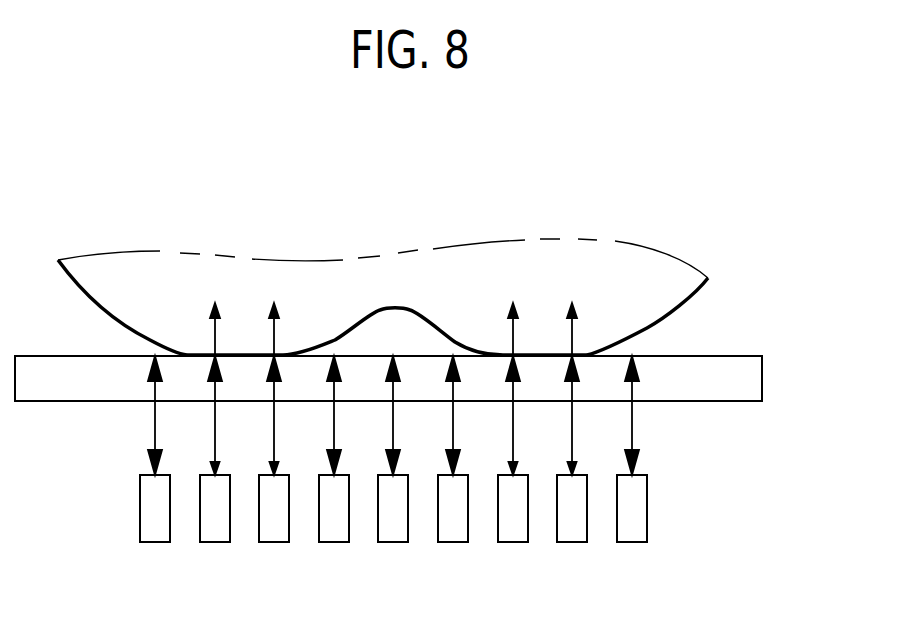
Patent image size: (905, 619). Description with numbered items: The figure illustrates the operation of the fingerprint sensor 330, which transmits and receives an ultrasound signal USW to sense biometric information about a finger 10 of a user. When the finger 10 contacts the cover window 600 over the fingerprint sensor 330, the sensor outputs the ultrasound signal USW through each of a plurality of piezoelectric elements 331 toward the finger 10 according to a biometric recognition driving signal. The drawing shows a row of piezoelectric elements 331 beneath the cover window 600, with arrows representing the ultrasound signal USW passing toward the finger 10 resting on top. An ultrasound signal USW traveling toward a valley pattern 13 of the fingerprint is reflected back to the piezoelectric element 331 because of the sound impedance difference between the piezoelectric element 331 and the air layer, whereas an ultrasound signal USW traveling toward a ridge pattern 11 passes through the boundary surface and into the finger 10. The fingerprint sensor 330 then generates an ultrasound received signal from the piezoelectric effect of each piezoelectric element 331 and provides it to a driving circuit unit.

The finger 10 is at (383, 268).
The ridge pattern 11 is at (237, 353).
The valley pattern 13 is at (394, 307).
The cover window 600 is at (762, 378).
The ultrasound signal USW is at (635, 430).
The fingerprint sensor 330 is at (467, 508).
The piezoelectric element 331 is at (647, 507).